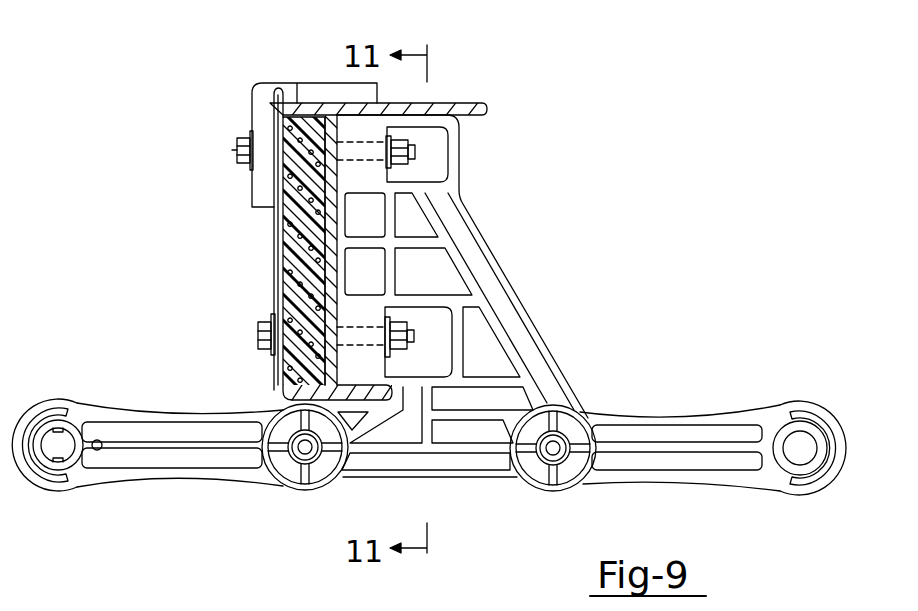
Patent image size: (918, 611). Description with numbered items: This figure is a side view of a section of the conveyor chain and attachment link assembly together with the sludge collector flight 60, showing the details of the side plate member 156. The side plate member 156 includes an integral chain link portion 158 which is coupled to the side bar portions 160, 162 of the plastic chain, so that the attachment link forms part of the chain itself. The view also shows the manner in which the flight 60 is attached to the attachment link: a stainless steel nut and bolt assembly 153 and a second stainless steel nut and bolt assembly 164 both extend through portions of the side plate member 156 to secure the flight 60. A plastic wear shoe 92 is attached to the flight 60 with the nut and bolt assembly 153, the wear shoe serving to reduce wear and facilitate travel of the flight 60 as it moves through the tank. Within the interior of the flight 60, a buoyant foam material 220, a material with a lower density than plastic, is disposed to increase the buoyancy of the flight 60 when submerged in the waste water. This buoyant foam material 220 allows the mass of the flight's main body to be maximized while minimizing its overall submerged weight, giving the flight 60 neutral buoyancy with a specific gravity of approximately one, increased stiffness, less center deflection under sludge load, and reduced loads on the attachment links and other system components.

The sludge collector flight 60 is at (268, 237).
The wear shoe 92 is at (328, 93).
The nut and bolt assembly 153 is at (236, 152).
The side plate member 156 is at (503, 250).
The integral chain link portion 158 is at (323, 485).
The side bar portion 160 is at (668, 423).
The side bar portion 162 is at (147, 417).
The second nut and bolt assembly 164 is at (258, 337).
The buoyant foam material 220 is at (296, 100).